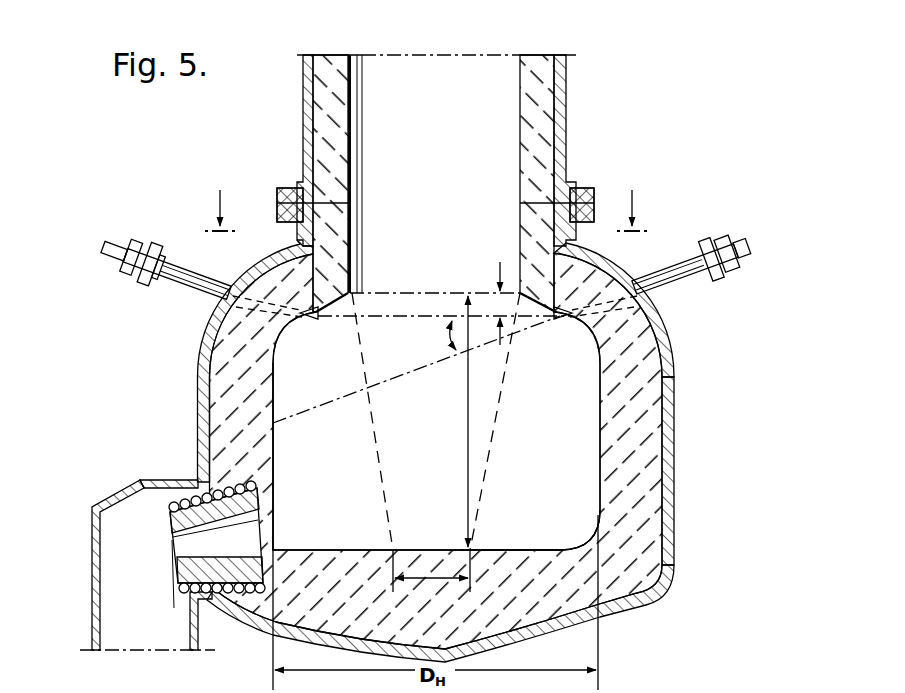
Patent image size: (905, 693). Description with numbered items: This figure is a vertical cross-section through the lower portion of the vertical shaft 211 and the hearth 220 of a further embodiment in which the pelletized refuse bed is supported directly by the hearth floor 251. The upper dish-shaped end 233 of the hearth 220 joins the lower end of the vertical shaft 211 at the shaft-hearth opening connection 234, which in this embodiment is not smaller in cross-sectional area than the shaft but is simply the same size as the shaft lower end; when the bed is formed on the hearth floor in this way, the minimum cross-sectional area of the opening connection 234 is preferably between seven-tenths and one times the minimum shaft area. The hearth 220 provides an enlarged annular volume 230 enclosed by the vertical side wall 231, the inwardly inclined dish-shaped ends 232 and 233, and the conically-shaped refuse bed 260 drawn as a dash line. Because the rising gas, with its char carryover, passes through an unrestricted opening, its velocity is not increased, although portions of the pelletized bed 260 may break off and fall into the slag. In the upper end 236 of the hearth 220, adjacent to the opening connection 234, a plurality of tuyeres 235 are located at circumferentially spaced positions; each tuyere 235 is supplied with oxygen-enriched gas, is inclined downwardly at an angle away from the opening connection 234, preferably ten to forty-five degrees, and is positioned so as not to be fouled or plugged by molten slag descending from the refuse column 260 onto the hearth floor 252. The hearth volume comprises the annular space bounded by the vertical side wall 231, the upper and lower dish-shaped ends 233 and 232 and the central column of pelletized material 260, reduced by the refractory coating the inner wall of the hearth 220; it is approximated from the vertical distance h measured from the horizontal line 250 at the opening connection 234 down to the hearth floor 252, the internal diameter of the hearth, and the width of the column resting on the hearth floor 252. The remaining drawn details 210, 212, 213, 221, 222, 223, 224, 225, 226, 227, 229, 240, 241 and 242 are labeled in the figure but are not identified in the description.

The metallurgical vessel 210 is at (607, 100).
The vertical shaft 211 is at (301, 105).
The neck 212 is at (565, 86).
The neck lining 213 is at (353, 101).
The hearth 220 is at (475, 432).
The flange joint 221 is at (590, 188).
The steel shell 222 is at (675, 546).
The refractory lining 223 is at (622, 458).
The bottom tuyere 224 is at (238, 546).
The tuyere refractory block 225 is at (262, 523).
The tuyere gas passage 226 is at (180, 563).
The tuyere housing 227 is at (123, 631).
The housing top wall 229 is at (189, 479).
The annular volume 230 is at (337, 456).
The vertical side wall 231 is at (276, 421).
The lower dish-shaped end 232 is at (281, 636).
The upper dish-shaped end 233 is at (662, 251).
The shaft-hearth opening connection 234 is at (421, 254).
The tuyeres 235 is at (152, 238).
The upper end of hearth 236 is at (336, 306).
The right nozzle opening 240 is at (560, 318).
The nozzle axis 241 is at (390, 381).
The horizontal reference plane 242 is at (383, 319).
The horizontal line 250 is at (447, 292).
The hearth floor 251 is at (524, 548).
The hearth floor 252 is at (429, 548).
The pelletized refuse bed 260 is at (491, 466).